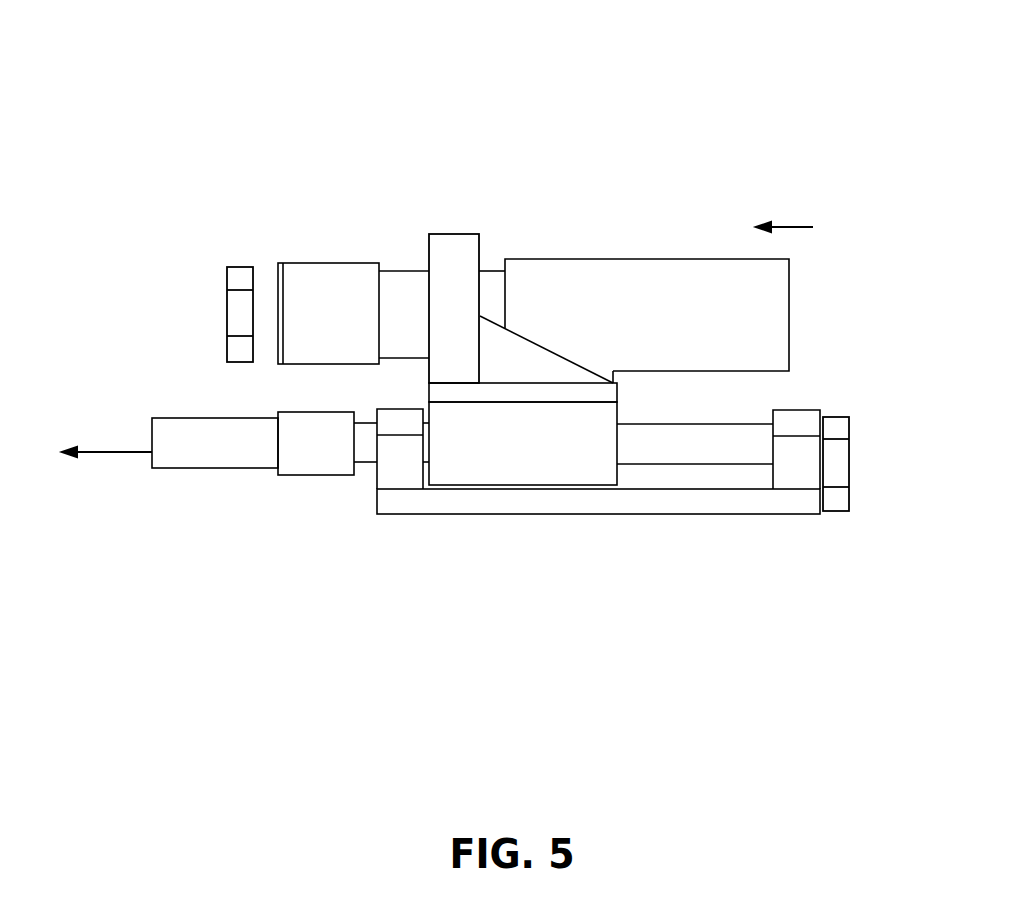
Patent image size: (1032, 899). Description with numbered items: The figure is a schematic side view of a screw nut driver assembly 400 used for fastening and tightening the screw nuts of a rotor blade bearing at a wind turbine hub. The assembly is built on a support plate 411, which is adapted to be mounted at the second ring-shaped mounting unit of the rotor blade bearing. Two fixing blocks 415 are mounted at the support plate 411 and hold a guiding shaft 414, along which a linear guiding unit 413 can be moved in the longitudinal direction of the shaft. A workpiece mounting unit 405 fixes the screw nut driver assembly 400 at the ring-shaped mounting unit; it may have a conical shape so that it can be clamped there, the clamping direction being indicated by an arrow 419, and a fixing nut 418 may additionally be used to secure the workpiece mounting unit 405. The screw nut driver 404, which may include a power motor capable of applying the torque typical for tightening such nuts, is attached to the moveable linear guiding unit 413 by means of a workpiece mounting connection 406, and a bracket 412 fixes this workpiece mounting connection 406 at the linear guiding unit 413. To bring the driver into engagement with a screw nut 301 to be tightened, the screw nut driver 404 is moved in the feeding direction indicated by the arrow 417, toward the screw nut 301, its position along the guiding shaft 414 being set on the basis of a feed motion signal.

The screw nut driver assembly 400 is at (463, 43).
The screw nut 301 is at (233, 276).
The screw nut driver 404 is at (588, 279).
The workpiece mounting unit 405 is at (230, 430).
The workpiece mounting connection 406 is at (448, 254).
The support plate 411 is at (498, 500).
The bracket 412 is at (530, 358).
The linear guiding unit 413 is at (482, 474).
The guiding shaft 414 is at (727, 445).
The fixing blocks 415 is at (397, 461).
The arrow 417 is at (773, 223).
The fixing nut 418 is at (846, 470).
The arrow 419 is at (100, 452).